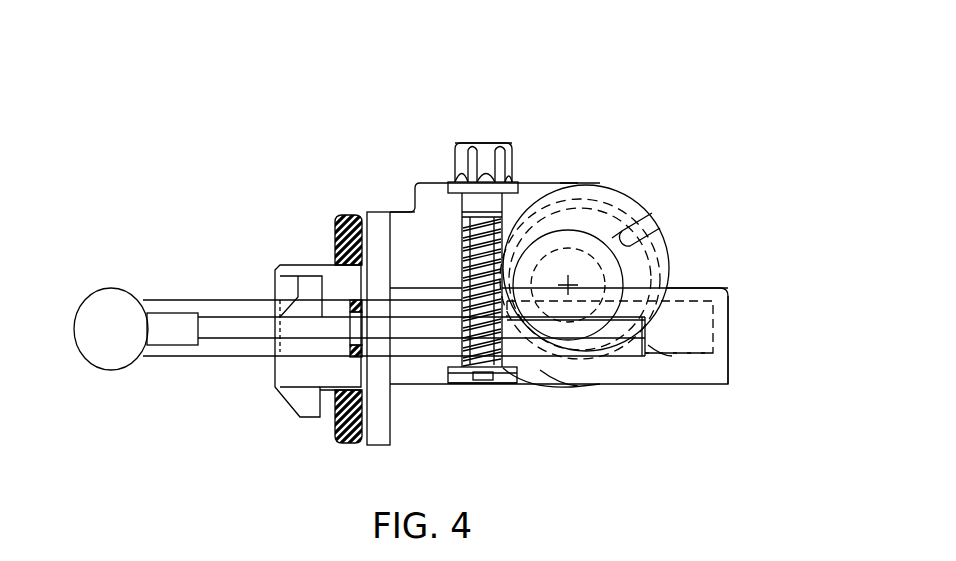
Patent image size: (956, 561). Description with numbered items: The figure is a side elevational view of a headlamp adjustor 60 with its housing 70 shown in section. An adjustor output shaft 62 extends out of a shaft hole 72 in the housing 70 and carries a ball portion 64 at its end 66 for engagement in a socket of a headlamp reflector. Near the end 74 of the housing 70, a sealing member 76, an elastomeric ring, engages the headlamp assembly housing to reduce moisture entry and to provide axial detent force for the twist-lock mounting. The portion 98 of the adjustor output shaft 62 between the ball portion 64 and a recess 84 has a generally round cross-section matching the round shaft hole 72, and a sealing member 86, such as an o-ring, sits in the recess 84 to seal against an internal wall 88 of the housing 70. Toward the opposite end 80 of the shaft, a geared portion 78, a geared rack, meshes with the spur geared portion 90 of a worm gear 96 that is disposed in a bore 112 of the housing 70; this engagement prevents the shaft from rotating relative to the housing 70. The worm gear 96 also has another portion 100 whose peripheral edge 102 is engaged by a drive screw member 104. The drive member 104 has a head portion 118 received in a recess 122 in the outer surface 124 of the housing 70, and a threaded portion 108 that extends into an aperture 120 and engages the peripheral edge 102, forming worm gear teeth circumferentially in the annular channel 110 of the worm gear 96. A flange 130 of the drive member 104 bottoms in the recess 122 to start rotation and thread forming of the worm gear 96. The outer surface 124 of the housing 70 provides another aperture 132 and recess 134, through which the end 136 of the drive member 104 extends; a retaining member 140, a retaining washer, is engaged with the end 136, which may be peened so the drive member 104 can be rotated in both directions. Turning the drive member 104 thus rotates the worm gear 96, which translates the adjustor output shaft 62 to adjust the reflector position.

The headlamp adjustor 60 is at (748, 432).
The adjustor output shaft 62 is at (220, 300).
The ball portion 64 is at (125, 357).
The end 66 is at (74, 333).
The housing 70 is at (629, 390).
The shaft hole 72 is at (283, 340).
The end 74 is at (274, 297).
The sealing member 76 is at (346, 214).
The geared portion 78 is at (613, 320).
The end 80 is at (649, 343).
The recess 84 is at (355, 303).
The sealing member 86 is at (350, 353).
The internal wall 88 is at (459, 311).
The spur geared portion 90 is at (587, 250).
The worm gear 96 is at (654, 230).
The portion 98 is at (245, 357).
The portion 100 is at (587, 200).
The peripheral edge 102 is at (547, 200).
The drive screw member 104 is at (452, 208).
The threaded portion 108 is at (462, 384).
The annular channel 110 is at (590, 358).
The bore 112 is at (650, 231).
The head portion 118 is at (462, 142).
The aperture 120 is at (465, 184).
The recess 122 is at (537, 182).
The outer surface 124 is at (560, 182).
The flange 130 is at (472, 190).
The aperture 132 is at (511, 382).
The recess 134 is at (461, 385).
The end 136 is at (487, 381).
The retaining member 140 is at (578, 386).